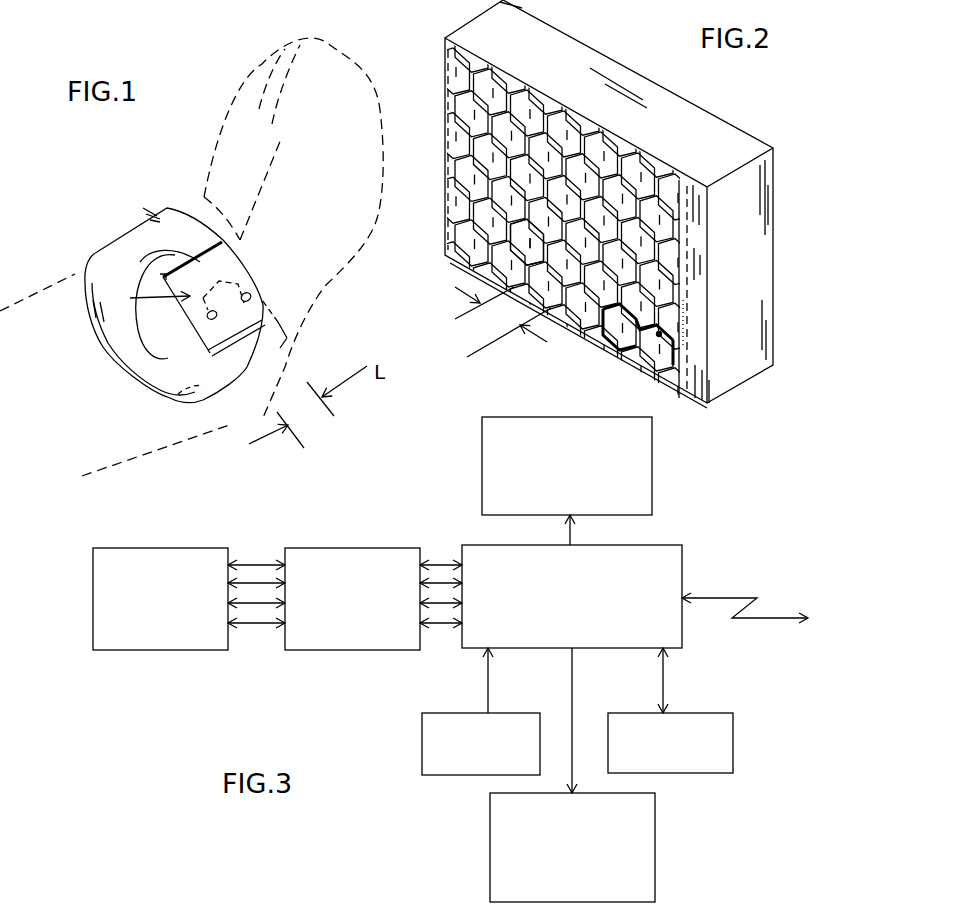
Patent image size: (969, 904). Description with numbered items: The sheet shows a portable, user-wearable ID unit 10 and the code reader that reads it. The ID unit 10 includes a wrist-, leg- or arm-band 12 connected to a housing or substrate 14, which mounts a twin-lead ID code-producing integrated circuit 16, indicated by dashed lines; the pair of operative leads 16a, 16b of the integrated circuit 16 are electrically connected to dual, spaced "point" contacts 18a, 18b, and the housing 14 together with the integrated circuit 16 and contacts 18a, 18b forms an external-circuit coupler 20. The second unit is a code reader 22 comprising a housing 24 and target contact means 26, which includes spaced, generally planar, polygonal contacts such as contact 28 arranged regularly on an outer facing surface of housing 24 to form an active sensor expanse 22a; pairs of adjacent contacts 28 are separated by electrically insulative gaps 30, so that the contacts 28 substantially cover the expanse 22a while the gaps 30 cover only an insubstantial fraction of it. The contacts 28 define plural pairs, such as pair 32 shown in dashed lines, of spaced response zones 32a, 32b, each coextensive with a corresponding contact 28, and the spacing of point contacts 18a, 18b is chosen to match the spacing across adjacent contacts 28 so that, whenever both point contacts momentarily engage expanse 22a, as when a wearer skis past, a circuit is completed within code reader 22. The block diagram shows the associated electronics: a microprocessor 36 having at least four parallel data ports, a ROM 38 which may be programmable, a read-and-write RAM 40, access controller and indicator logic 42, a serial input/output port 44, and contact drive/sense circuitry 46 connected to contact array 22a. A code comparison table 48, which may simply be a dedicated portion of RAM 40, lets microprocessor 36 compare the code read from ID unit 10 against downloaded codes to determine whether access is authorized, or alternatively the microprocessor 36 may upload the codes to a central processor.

In FIG. 1, the ID unit 10 is at (133, 168).
In FIG. 1, the band 12 is at (232, 376).
In FIG. 1, the housing 14 is at (246, 237).
In FIG. 1, the ID code-producing integrated circuit 16 is at (253, 258).
In FIG. 1, the operative lead 16a is at (287, 338).
In FIG. 1, the operative lead 16b is at (203, 419).
In FIG. 1, the point contact 18a is at (247, 293).
In FIG. 1, the point contact 18b is at (208, 316).
In FIG. 1, the external-circuit coupler 20 is at (148, 301).
In FIG. 2, the code reader 22 is at (760, 125).
In FIG. 2, the active sensor expanse 22a is at (445, 95).
In FIG. 3, the active sensor expanse 22a is at (145, 655).
In FIG. 2, the housing 24 is at (745, 142).
In FIG. 2, the target contact means 26 is at (522, 230).
In FIG. 2, the contact 28 is at (655, 340).
In FIG. 2, the gap 30 is at (662, 333).
In FIG. 2, the pair 32 is at (600, 332).
In FIG. 2, the response zone 32a is at (615, 329).
In FIG. 2, the response zone 32b is at (683, 352).
In FIG. 3, the microprocessor 36 is at (682, 572).
In FIG. 3, the ROM 38 is at (458, 713).
In FIG. 3, the RAM 40 is at (715, 713).
In FIG. 3, the access controller and indicator logic 42 is at (655, 847).
In FIG. 3, the serial input/output port 44 is at (762, 619).
In FIG. 3, the contact drive/sense circuitry 46 is at (327, 655).
In FIG. 3, the code comparison table 48 is at (482, 490).